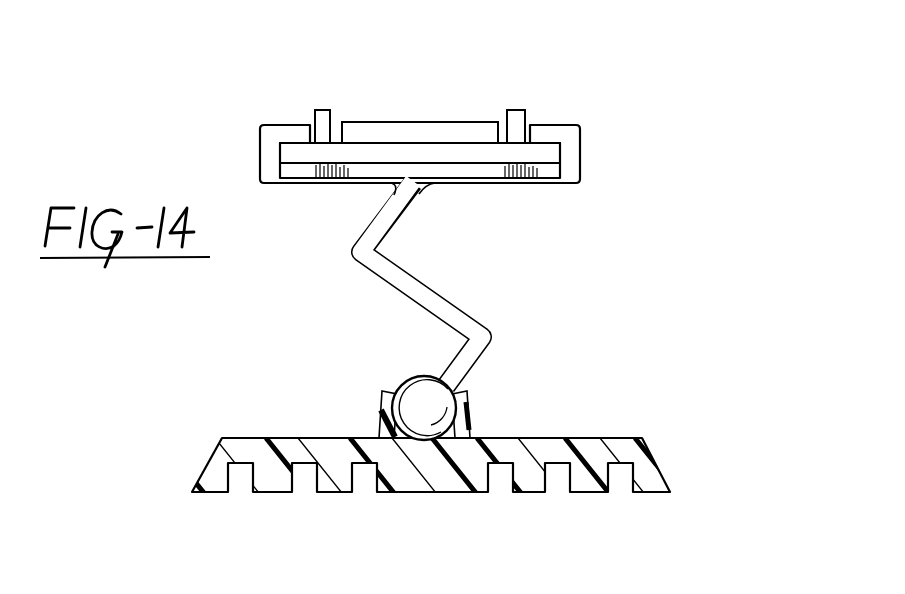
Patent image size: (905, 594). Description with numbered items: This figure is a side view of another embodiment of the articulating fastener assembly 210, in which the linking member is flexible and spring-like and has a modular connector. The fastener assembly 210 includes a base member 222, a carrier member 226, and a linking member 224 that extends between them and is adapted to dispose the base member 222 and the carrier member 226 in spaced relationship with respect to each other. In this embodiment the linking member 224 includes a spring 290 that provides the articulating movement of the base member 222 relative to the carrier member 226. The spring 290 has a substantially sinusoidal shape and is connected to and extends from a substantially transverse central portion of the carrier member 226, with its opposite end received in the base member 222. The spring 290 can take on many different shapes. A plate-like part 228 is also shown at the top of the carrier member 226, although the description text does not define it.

The fastener assembly 210 is at (670, 230).
The base member 222 is at (660, 440).
The linking member 224 is at (492, 310).
The carrier member 226 is at (581, 155).
The plate / slider block 228 is at (410, 121).
The spring 290 is at (429, 290).